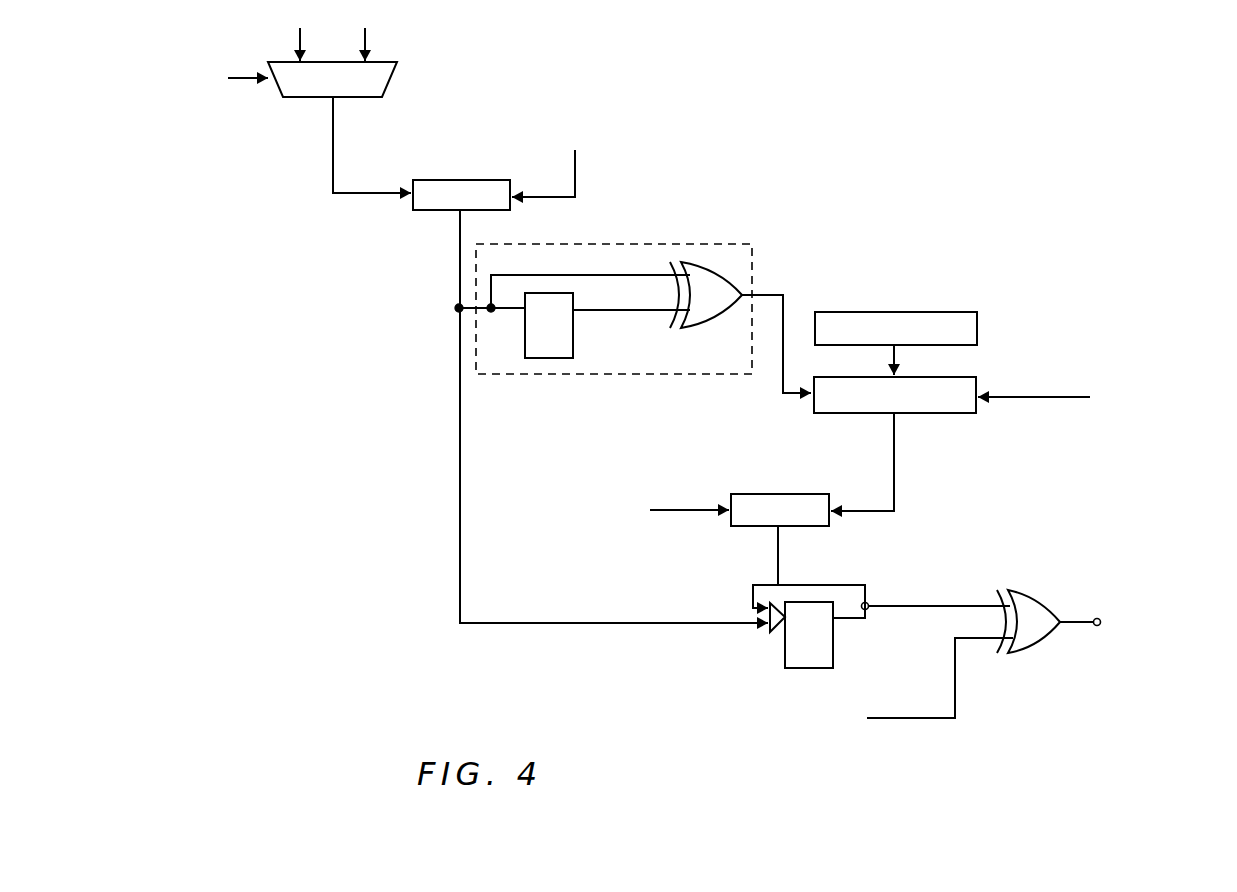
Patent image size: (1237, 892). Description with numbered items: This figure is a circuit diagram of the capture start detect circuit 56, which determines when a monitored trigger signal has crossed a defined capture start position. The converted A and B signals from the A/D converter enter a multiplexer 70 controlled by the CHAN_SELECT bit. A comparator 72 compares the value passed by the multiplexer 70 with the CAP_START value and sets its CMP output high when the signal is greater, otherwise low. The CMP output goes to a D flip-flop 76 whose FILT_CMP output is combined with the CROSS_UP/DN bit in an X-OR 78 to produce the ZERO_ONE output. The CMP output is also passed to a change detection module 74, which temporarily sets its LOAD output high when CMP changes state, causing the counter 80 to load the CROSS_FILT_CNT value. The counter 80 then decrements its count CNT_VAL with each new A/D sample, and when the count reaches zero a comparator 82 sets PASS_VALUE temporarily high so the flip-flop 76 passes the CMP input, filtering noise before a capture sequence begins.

The capture start detect circuit 56 is at (697, 34).
The multiplexer 70 is at (397, 82).
The comparator 72 is at (440, 180).
The change detection module 74 is at (716, 244).
The D flip-flop 76 is at (833, 645).
The X-OR 78 is at (1030, 598).
The counter 80 is at (977, 375).
The comparator 82 is at (797, 494).